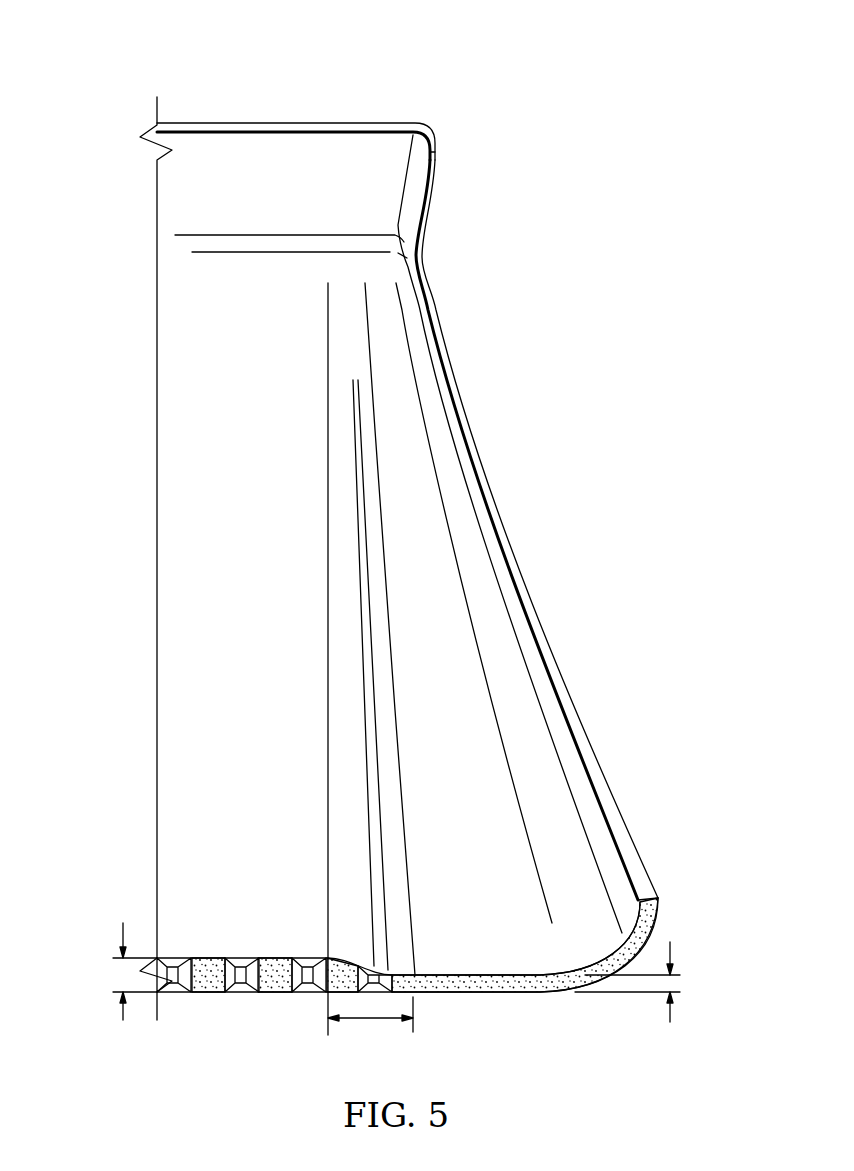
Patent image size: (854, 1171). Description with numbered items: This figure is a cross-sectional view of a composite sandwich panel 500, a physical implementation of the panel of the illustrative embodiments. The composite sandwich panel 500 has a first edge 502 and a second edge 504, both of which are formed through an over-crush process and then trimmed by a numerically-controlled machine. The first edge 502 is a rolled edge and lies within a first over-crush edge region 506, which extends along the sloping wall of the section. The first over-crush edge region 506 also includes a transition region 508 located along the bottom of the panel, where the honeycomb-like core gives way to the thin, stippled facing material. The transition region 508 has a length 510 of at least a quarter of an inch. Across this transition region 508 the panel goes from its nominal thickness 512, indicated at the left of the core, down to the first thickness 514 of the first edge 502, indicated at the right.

The composite sandwich panel 500 is at (190, 76).
The first edge 502 is at (606, 787).
The second edge 504 is at (348, 124).
The first over-crush edge region 506 is at (413, 813).
The transition region 508 is at (353, 946).
The length 510 is at (368, 1021).
The nominal thickness 512 is at (123, 1021).
The first thickness 514 is at (673, 1021).